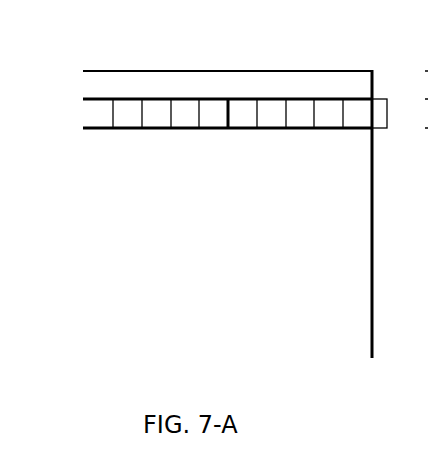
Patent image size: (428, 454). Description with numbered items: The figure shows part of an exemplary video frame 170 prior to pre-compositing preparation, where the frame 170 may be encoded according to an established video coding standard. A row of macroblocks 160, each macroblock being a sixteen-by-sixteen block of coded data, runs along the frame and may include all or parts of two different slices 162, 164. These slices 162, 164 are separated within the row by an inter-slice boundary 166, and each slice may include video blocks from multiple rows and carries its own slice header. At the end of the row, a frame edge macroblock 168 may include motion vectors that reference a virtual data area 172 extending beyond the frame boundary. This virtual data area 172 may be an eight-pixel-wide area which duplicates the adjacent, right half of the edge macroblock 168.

The row of macroblocks 160 is at (226, 209).
The first slice 162 is at (157, 98).
The second slice 164 is at (300, 99).
The inter-slice boundary 166 is at (231, 111).
The frame edge macroblock 168 is at (357, 114).
The video frame 170 is at (373, 332).
The virtual data area 172 is at (378, 100).